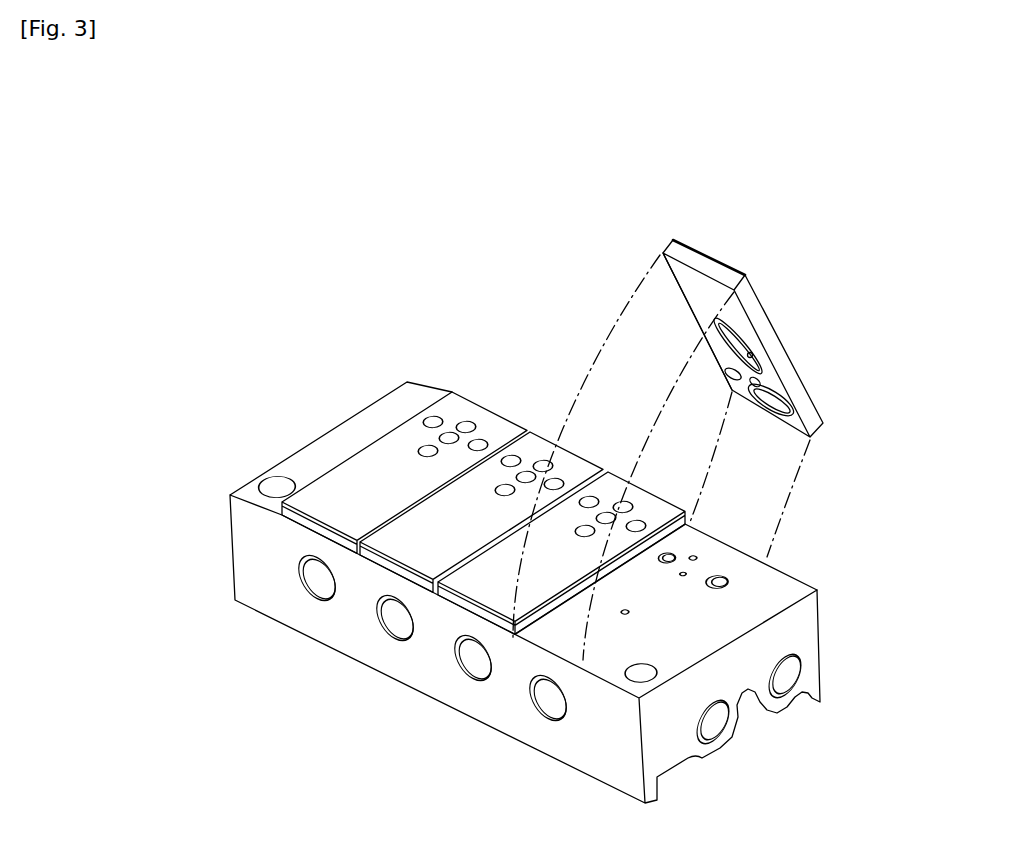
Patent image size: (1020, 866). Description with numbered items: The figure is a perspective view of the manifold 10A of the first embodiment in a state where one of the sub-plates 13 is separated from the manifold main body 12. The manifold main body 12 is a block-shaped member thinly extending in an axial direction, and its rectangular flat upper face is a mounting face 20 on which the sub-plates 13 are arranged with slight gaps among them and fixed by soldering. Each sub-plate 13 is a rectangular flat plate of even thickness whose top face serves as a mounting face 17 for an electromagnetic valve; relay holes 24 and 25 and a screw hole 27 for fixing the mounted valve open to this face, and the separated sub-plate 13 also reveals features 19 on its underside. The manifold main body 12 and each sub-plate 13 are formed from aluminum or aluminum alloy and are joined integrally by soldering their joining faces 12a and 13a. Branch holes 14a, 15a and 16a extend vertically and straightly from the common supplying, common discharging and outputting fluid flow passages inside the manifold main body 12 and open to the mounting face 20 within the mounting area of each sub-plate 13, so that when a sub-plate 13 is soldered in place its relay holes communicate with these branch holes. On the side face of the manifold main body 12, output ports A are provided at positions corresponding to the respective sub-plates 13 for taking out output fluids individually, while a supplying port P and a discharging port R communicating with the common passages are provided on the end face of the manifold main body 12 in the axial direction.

The manifold 10A is at (436, 290).
The manifold main body 12 is at (821, 586).
The joining face 12a is at (735, 555).
The sub-plate 13 is at (580, 403).
The joining face 13a is at (680, 287).
The branch hole 14a is at (626, 615).
The branch hole 15a is at (684, 577).
The branch hole 16a is at (697, 556).
The mounting face 17 is at (368, 511).
The communication holes 19 is at (740, 332).
The mounting face 20 is at (623, 688).
The relay hole 24 is at (753, 353).
The relay hole 25 is at (760, 378).
The screw hole 27 is at (727, 582).
The output port A is at (473, 658).
The supplying port P is at (717, 720).
The discharging port R is at (783, 684).